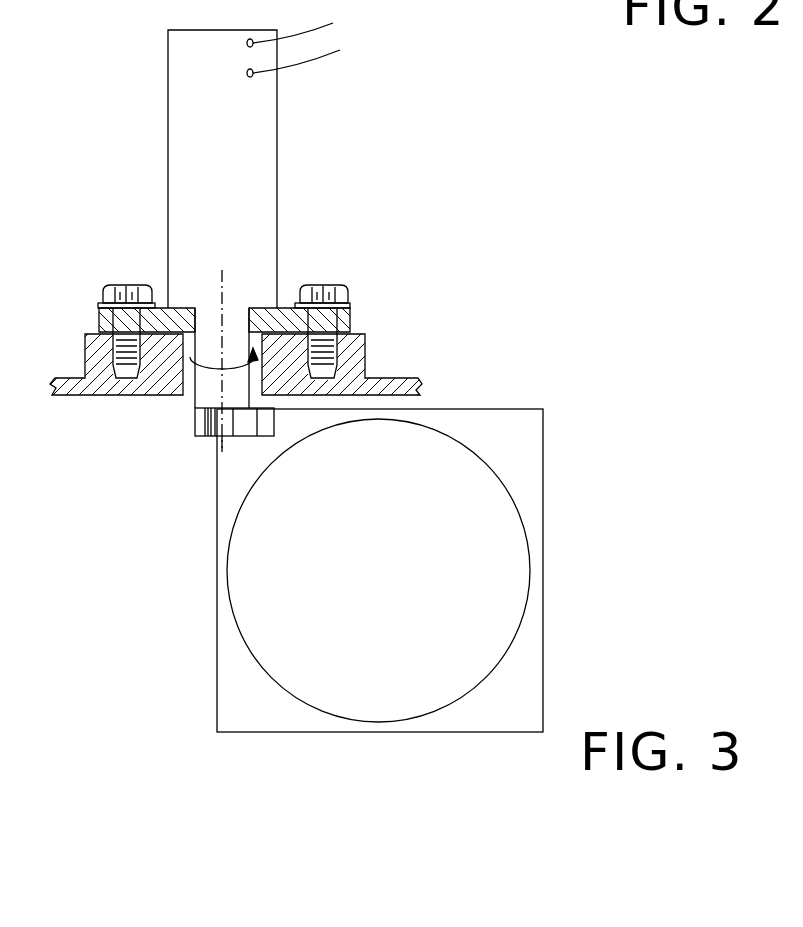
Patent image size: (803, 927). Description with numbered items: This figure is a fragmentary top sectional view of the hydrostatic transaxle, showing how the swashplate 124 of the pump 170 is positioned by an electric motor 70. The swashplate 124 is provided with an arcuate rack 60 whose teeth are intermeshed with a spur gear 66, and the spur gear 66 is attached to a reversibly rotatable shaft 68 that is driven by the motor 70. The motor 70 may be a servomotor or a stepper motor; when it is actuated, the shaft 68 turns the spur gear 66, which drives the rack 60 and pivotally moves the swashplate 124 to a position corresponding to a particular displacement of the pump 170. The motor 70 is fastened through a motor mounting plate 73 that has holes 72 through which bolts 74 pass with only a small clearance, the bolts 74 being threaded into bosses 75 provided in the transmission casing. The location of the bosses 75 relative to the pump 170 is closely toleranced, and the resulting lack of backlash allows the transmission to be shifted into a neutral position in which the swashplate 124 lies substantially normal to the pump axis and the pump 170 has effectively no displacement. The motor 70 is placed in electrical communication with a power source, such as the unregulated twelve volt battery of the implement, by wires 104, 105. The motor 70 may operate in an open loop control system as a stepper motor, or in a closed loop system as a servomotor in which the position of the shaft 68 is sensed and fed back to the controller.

The arcuate rack 60 is at (267, 422).
The spur gear 66 is at (195, 418).
The reversibly rotatable shaft 68 is at (236, 332).
The motor 70 is at (270, 182).
The holes 72 is at (130, 292).
The motor mounting plate 73 is at (162, 310).
The bolts 74 is at (105, 302).
The bosses 75 is at (90, 350).
The wire 104 is at (310, 37).
The wire 105 is at (312, 58).
The swashplate 124 is at (530, 442).
The pump 170 is at (556, 508).